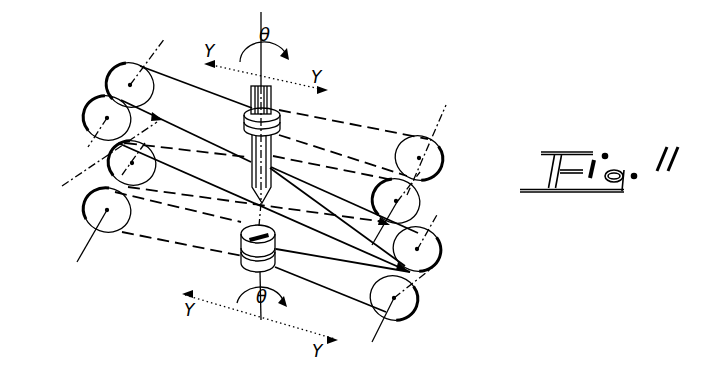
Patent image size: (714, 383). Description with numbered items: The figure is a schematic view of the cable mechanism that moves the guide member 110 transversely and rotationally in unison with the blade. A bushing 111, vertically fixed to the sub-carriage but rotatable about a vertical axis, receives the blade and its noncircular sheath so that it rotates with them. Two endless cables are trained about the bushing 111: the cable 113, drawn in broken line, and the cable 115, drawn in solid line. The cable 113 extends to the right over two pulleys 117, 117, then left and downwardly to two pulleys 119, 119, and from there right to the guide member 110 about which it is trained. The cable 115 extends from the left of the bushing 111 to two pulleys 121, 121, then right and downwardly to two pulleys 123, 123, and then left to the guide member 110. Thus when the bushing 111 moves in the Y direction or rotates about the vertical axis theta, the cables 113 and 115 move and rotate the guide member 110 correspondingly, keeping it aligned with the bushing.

The guide member 110 is at (243, 268).
The bushing 111 is at (271, 111).
The cable 113 is at (390, 100).
The cable 115 is at (176, 78).
The pulleys 117 is at (410, 195).
The pulleys 119 is at (92, 206).
The pulleys 121 is at (100, 110).
The pulleys 123 is at (424, 311).